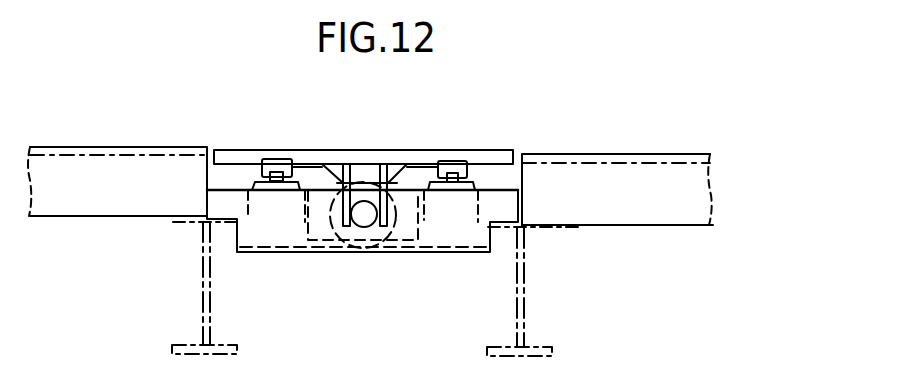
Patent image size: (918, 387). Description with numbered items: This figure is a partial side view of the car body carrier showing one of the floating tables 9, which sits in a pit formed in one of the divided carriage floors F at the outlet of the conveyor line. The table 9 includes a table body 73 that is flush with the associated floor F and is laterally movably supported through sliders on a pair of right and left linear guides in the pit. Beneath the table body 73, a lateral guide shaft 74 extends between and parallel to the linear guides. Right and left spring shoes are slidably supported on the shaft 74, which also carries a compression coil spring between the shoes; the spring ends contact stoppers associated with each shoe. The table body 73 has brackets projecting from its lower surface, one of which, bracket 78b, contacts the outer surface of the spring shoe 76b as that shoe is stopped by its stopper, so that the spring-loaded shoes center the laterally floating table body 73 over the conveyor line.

The floating table 9 is at (491, 144).
The table body 73 is at (318, 153).
The lateral guide shaft 74 is at (366, 222).
The spring shoe 76b is at (352, 244).
The bracket 78b is at (363, 173).
The carriage floor F is at (568, 153).